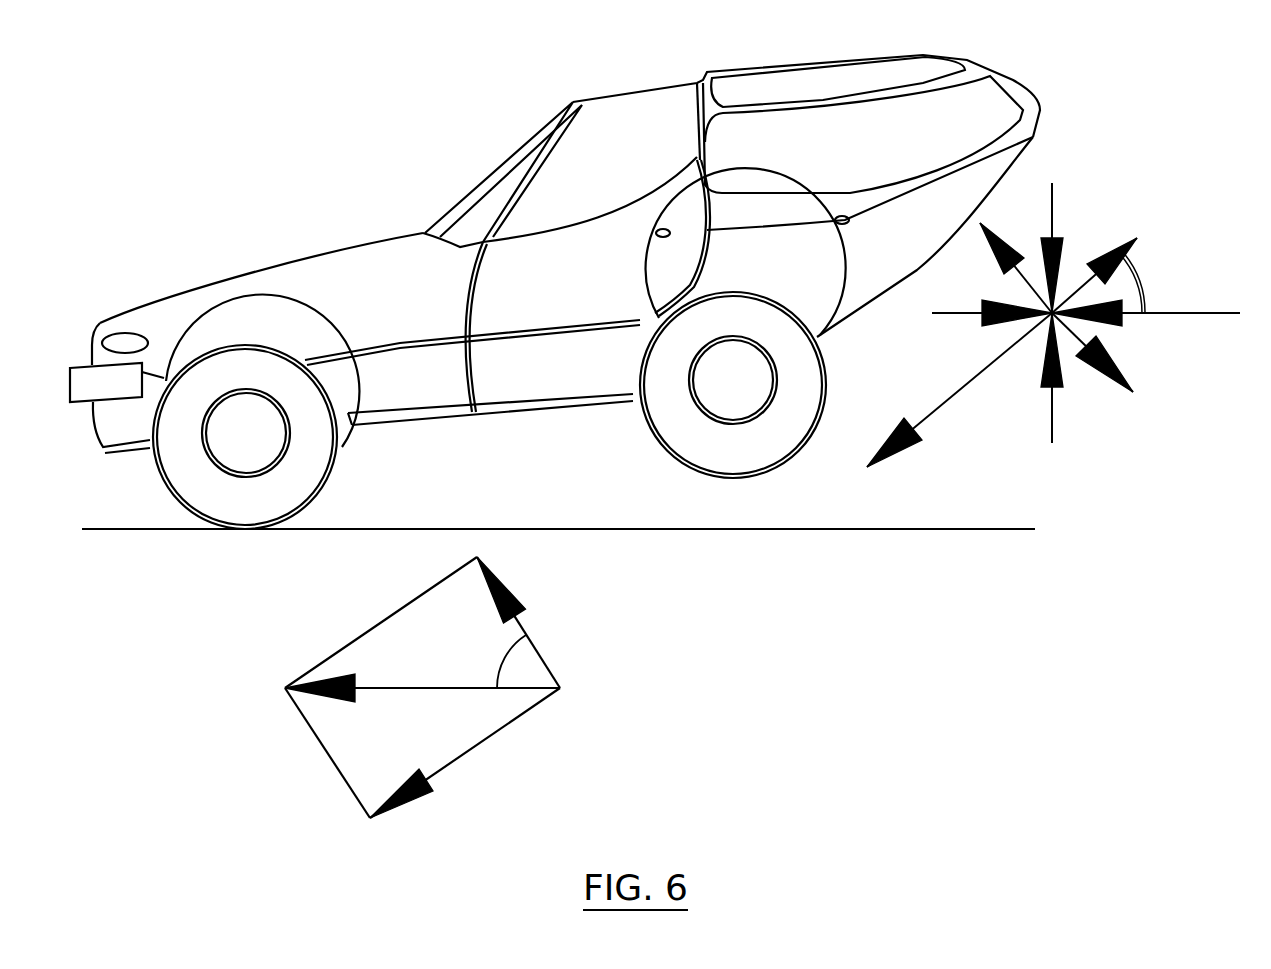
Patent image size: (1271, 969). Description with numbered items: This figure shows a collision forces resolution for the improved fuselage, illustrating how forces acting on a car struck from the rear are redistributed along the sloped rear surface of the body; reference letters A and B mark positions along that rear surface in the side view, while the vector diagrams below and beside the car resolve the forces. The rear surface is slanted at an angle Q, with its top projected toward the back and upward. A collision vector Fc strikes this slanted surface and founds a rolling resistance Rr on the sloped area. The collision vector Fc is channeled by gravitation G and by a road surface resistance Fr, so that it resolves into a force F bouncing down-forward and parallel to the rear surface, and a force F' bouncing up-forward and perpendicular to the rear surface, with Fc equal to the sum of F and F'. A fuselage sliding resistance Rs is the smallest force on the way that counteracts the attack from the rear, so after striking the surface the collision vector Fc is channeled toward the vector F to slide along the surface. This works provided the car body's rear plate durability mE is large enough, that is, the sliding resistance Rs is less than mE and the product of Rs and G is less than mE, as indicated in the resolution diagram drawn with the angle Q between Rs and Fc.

The point A rear contact point A is at (875, 360).
The point B rear body B is at (983, 183).
The gravitation G is at (1059, 245).
The road surface resistance Fr is at (1062, 378).
The rolling resistance Rr is at (990, 300).
The collision vector Fc is at (762, 490).
The fuselage sliding resistance Rs is at (1094, 263).
The angle Q is at (829, 469).
The up-forward bouncing force F' is at (764, 448).
The down-forward bouncing force F is at (711, 565).
The car body durability mE is at (1106, 352).